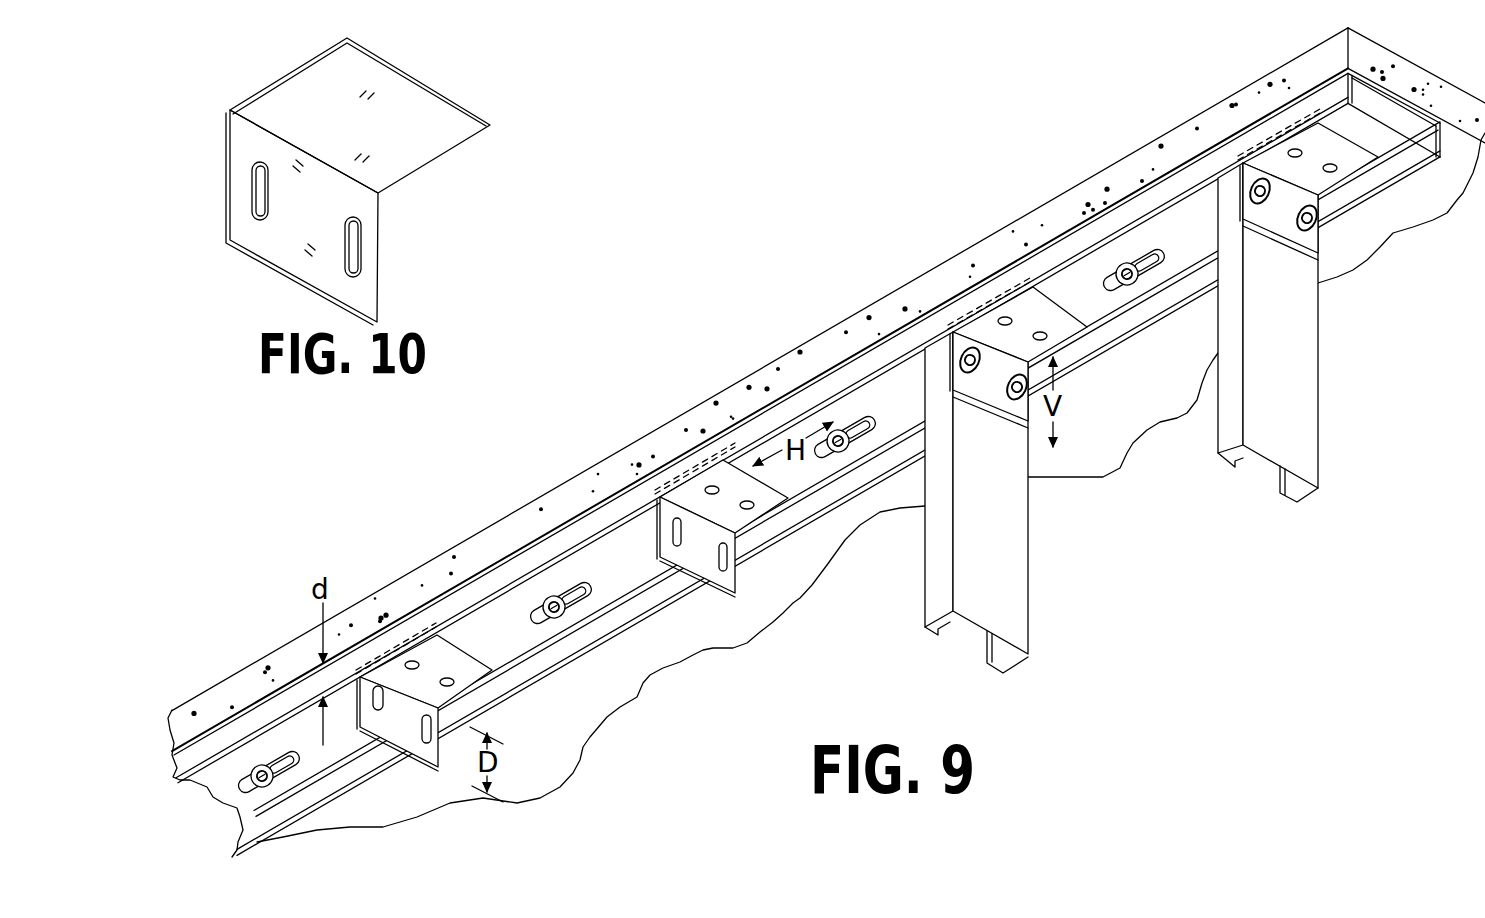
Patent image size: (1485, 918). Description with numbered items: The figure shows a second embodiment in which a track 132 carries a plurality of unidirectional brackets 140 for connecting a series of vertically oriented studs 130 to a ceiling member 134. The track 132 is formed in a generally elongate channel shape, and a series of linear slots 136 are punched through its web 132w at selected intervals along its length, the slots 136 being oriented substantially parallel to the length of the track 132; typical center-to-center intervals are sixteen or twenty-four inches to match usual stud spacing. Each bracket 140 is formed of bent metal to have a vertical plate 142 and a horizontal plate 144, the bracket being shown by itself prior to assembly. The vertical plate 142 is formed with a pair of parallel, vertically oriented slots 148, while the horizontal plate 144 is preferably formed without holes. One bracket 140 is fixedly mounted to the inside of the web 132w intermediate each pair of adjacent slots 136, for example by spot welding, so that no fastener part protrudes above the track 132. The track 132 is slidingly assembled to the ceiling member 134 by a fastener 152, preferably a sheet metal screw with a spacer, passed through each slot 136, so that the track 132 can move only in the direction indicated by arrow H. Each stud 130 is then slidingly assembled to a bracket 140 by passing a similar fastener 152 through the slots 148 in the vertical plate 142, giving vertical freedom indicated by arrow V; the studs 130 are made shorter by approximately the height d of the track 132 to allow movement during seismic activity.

In FIG. 9, the stud 130 is at (1307, 353).
In FIG. 9, the track 132 is at (788, 522).
In FIG. 9, the web 132w is at (638, 573).
In FIG. 9, the ceiling member 134 is at (566, 742).
In FIG. 9, the slot 136 is at (1132, 272).
In FIG. 9, the bracket 140 is at (416, 768).
In FIG. 10, the bracket 140 is at (378, 186).
In FIG. 10, the vertical plate 142 is at (367, 291).
In FIG. 10, the horizontal plate 144 is at (468, 134).
In FIG. 10, the slot 148 is at (353, 248).
In FIG. 9, the fastener 152 is at (1312, 224).